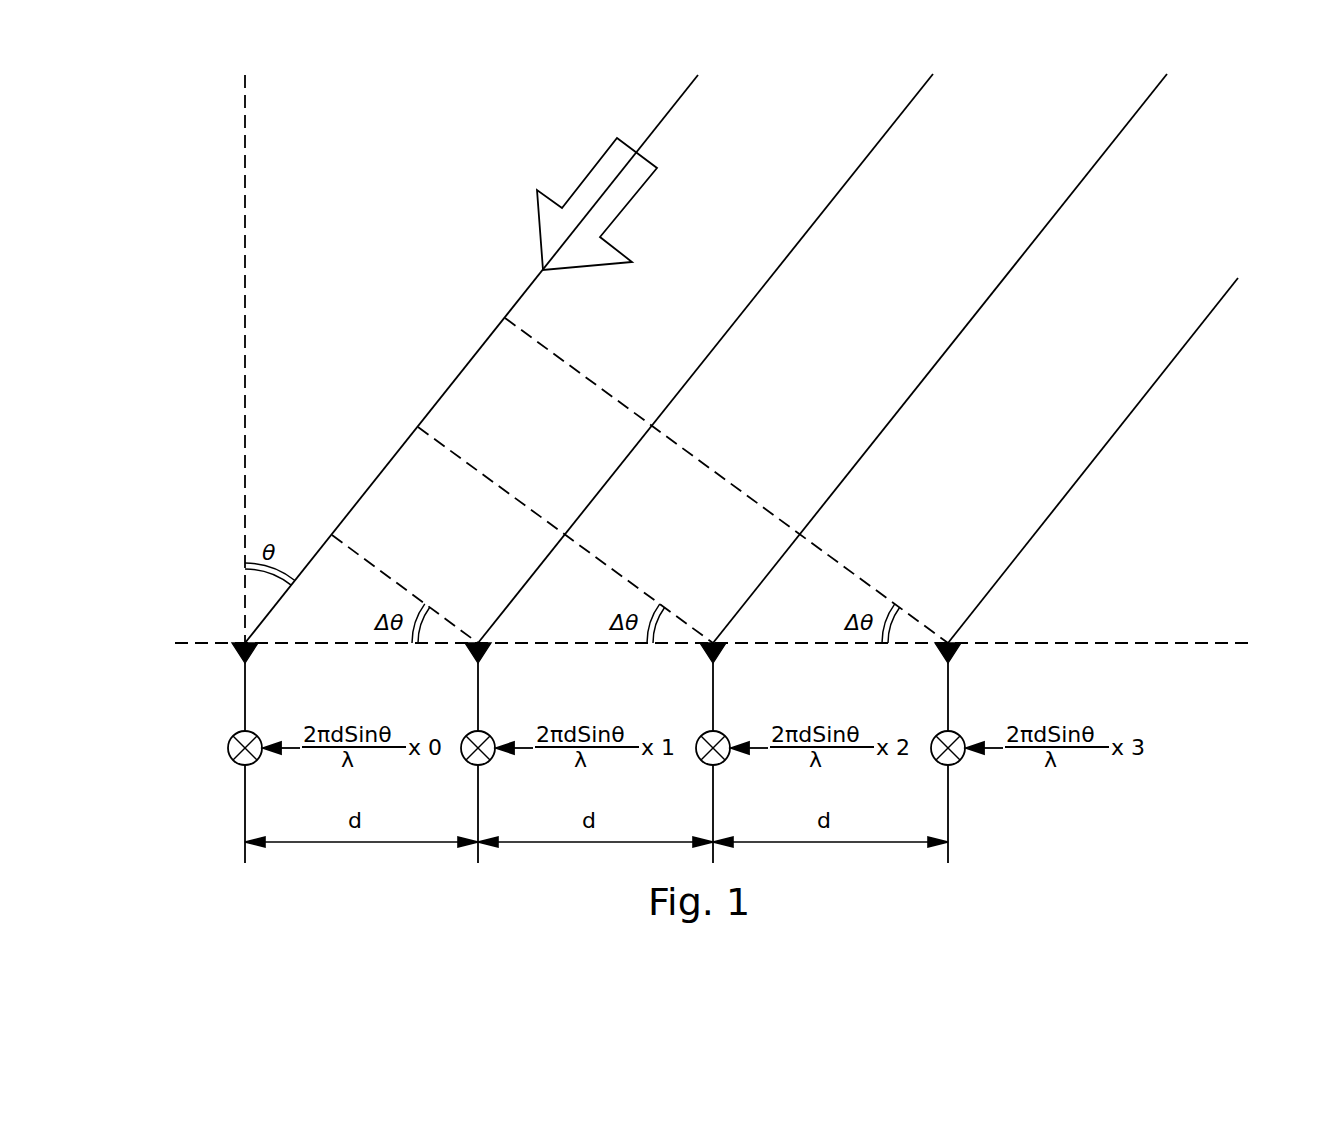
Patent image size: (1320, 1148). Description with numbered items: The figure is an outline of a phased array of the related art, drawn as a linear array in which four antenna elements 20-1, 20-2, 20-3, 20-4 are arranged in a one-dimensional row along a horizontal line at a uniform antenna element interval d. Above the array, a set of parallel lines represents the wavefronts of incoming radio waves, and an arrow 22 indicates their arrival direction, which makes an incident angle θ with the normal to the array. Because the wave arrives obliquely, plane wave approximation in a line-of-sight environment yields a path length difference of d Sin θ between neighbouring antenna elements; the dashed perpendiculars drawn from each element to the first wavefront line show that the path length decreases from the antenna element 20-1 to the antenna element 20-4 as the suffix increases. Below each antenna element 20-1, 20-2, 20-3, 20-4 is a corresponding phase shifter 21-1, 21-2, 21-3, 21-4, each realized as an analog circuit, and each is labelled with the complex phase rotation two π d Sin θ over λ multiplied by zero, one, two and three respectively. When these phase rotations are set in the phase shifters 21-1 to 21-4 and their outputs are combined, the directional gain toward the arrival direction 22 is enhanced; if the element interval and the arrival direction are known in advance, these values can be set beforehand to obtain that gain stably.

The antenna element 20-1 is at (230, 657).
The antenna element 20-2 is at (463, 657).
The antenna element 20-3 is at (698, 657).
The antenna element 20-4 is at (933, 657).
The phase shifter 21-1 is at (245, 765).
The phase shifter 21-2 is at (478, 765).
The phase shifter 21-3 is at (713, 765).
The phase shifter 21-4 is at (948, 765).
The arrow indicating arrival direction of radio waves 22 is at (643, 186).